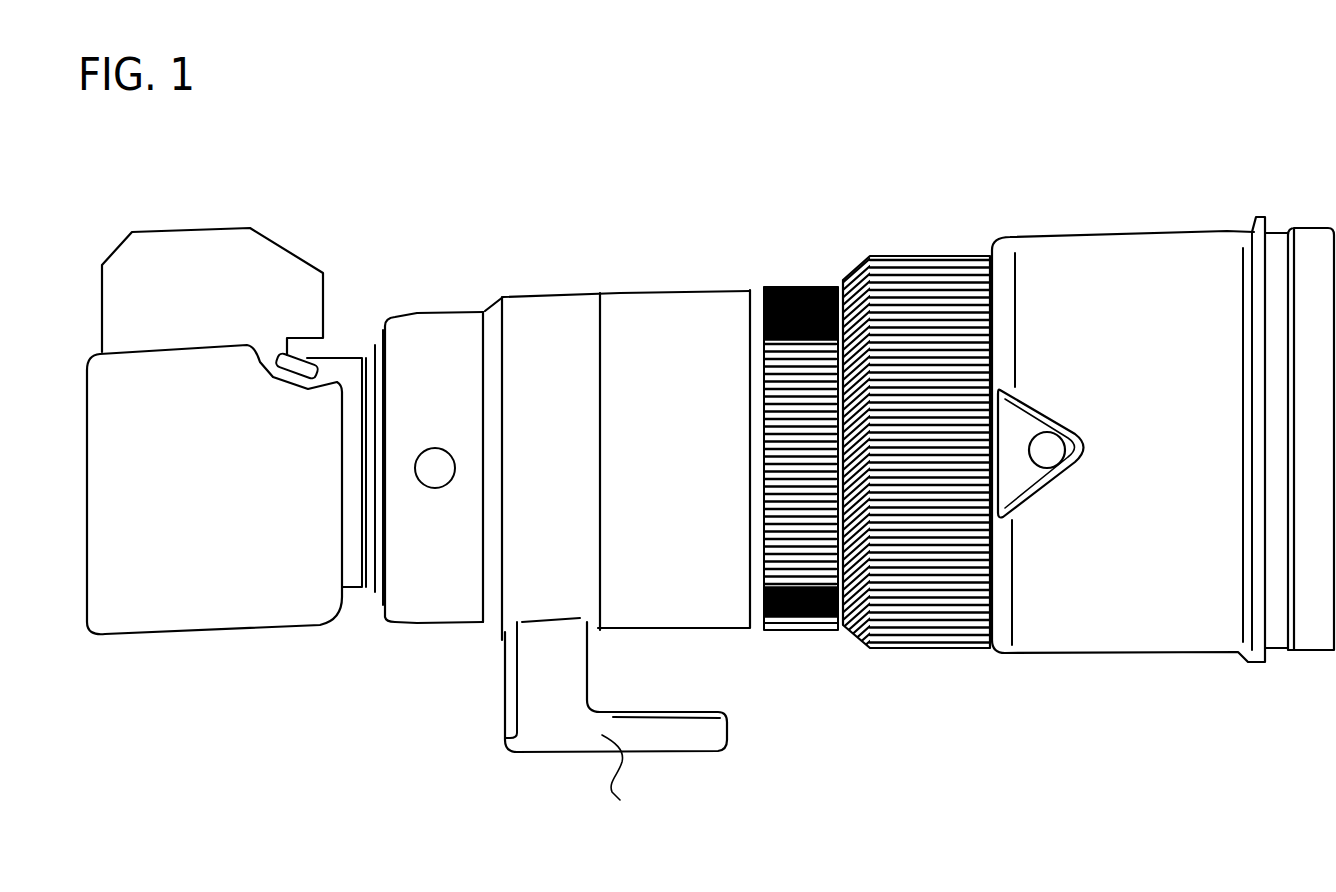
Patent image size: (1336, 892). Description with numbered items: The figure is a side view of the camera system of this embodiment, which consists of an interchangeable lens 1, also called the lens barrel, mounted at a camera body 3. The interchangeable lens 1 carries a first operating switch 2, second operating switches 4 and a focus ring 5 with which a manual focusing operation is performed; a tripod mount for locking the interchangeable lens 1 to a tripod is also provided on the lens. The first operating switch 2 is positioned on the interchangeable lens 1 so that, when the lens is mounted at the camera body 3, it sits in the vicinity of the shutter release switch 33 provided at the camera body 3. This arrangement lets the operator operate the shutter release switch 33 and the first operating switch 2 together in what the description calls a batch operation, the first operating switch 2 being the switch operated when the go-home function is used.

The interchangeable lens 1 is at (655, 278).
The first operating switch 2 is at (430, 470).
The camera body 3 is at (200, 220).
The shutter release switch 33 is at (305, 358).
The second operating switches 4 is at (1047, 448).
The focus ring 5 is at (930, 248).